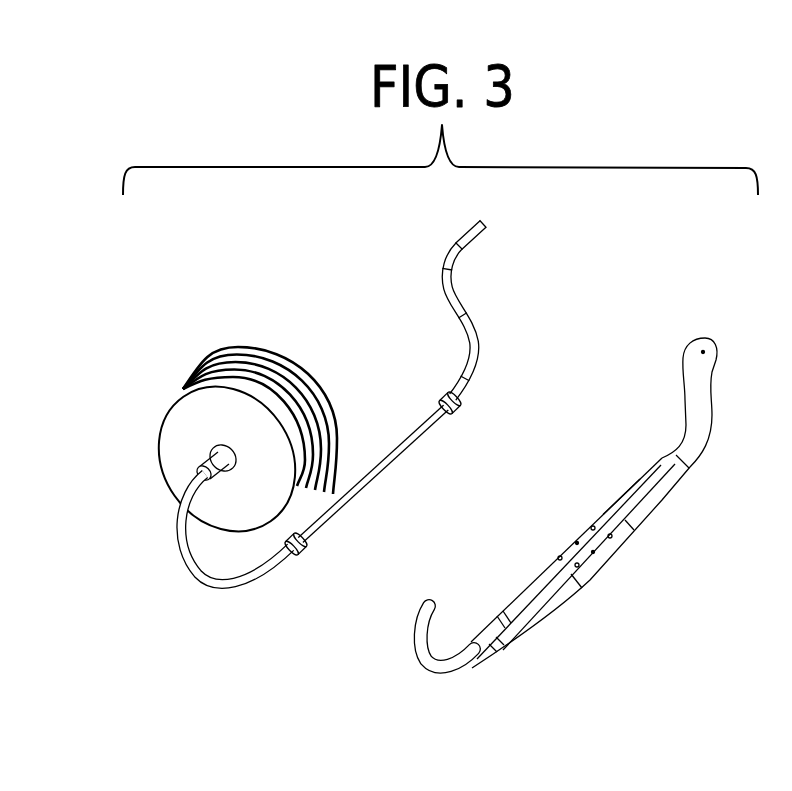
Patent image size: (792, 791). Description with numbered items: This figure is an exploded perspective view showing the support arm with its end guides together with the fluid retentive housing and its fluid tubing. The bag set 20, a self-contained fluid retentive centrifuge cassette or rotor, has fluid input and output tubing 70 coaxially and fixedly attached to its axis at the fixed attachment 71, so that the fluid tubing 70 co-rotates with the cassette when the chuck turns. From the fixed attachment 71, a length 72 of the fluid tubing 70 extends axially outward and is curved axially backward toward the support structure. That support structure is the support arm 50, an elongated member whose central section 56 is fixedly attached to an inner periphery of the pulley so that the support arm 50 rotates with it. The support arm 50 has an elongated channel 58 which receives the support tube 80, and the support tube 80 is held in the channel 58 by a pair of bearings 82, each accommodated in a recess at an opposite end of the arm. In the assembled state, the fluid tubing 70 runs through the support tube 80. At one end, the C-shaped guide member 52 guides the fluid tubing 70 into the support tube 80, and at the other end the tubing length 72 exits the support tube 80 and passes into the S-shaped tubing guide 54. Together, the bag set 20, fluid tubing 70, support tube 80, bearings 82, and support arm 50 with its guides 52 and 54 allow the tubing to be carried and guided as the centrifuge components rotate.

The bag set 20 is at (318, 404).
The fixed attachment 71 is at (196, 471).
The fluid tubing 70 is at (196, 577).
The length of tubing 72 is at (472, 355).
The support tube 80 is at (355, 491).
The bearings 82 is at (303, 544).
The support arm 50 is at (563, 503).
The C-shaped guide member 52 is at (416, 636).
The S-shaped tubing guide 54 is at (698, 388).
The central section 56 is at (575, 541).
The elongated channel 58 is at (615, 503).